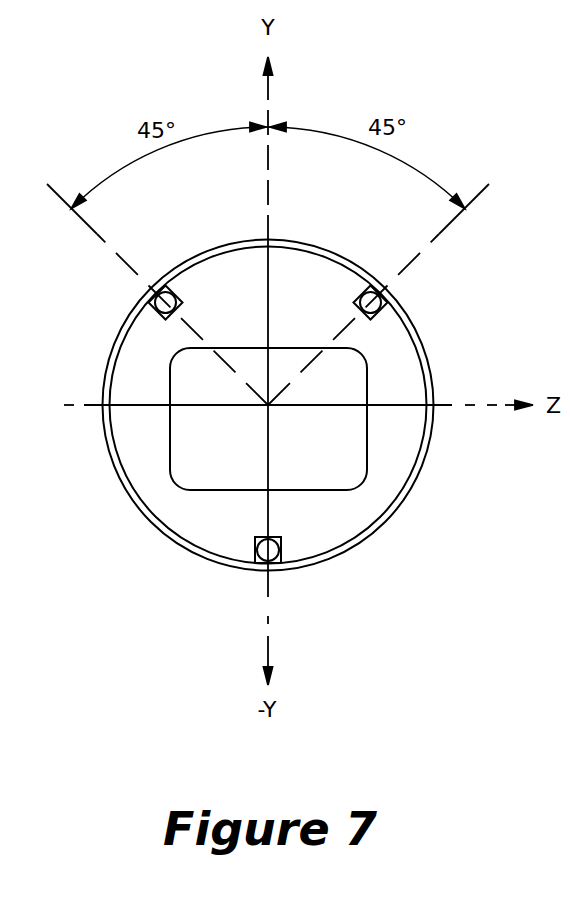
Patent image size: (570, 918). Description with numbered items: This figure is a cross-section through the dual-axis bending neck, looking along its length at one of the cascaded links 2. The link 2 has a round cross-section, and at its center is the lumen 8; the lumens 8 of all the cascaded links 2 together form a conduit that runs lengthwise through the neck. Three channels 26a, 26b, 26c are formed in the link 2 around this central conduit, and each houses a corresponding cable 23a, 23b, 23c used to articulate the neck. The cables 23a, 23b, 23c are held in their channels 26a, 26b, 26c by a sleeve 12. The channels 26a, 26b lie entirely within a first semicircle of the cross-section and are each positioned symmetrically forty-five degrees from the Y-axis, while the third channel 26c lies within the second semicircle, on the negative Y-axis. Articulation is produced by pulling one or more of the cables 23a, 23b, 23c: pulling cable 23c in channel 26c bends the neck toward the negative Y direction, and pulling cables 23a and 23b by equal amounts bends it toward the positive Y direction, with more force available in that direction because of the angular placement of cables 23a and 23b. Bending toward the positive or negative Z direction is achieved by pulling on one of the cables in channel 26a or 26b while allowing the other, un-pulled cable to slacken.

The link 2 is at (139, 464).
The sleeve 12 is at (423, 470).
The lumen 8 is at (322, 472).
The cable 23a is at (388, 300).
The cable 23b is at (164, 301).
The cable 23c is at (272, 563).
The channel 26a is at (384, 307).
The channel 26b is at (154, 315).
The channel 26c is at (253, 548).